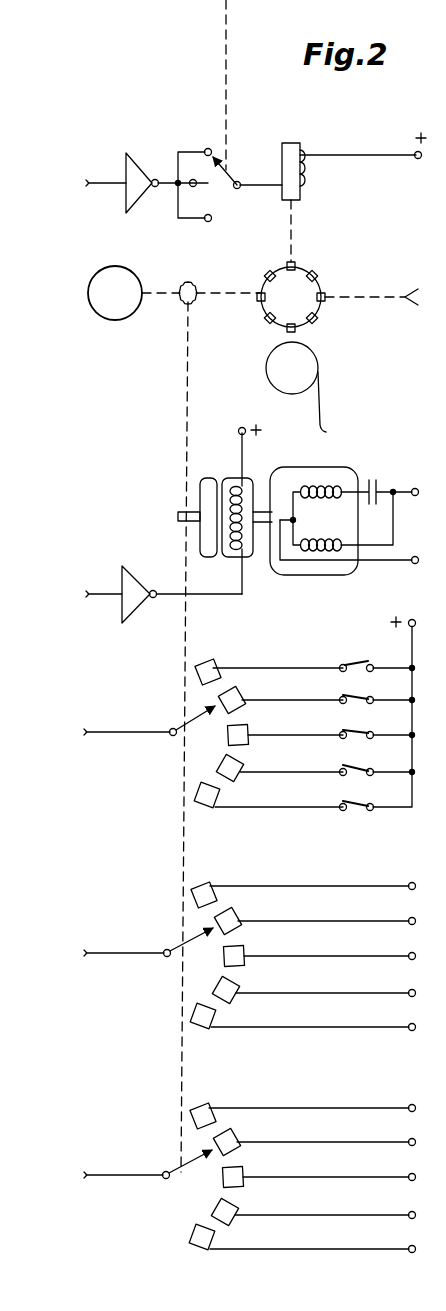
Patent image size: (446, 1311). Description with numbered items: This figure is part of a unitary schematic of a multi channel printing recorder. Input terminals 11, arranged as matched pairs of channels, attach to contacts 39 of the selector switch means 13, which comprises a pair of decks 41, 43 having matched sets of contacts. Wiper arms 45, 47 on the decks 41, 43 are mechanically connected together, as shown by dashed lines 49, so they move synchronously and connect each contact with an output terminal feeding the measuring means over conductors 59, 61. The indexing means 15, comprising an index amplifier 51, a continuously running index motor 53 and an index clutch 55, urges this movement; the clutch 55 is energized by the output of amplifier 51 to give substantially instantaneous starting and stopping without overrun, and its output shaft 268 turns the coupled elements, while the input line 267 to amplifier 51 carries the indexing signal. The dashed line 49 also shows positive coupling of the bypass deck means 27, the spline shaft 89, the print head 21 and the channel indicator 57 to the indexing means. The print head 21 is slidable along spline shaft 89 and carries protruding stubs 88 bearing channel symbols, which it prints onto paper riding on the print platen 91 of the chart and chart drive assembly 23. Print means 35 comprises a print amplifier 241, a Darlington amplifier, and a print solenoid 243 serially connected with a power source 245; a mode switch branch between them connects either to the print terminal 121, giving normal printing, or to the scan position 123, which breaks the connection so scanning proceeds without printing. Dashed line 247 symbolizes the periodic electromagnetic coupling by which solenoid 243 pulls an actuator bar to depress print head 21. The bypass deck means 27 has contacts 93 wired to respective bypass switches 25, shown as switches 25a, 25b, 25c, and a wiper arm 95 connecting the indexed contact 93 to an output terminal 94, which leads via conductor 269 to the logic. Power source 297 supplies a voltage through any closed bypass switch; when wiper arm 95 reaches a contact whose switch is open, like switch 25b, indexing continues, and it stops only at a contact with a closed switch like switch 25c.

The print means 35 is at (108, 78).
The print amplifier 241 is at (140, 162).
The print terminal 121 is at (205, 149).
The scan position 123 is at (189, 188).
The print solenoid 243 is at (290, 143).
The power source 245 is at (416, 150).
The dashed line 247 is at (294, 220).
The protruding stubs 88 is at (297, 266).
The print head 21 is at (311, 290).
The dashed lines 49 is at (162, 292).
The spline shaft 89 is at (194, 302).
The channel indicator 57 is at (118, 320).
The print platen 91 is at (274, 366).
The chart and chart drive assembly 23 is at (389, 359).
The indexing means 15 is at (135, 474).
The index clutch 55 is at (208, 478).
The index motor 53 is at (340, 467).
The output shaft 268 is at (178, 521).
The input line 267 is at (100, 593).
The index amplifier 51 is at (130, 615).
The power source 297 is at (412, 620).
The bypass deck means 27 is at (165, 702).
The conductor 269 is at (112, 733).
The output terminal 94 is at (170, 736).
The wiper arm 95 is at (200, 716).
The contacts 93 is at (204, 806).
The bypass switch means 25 is at (353, 812).
The switch 25a is at (359, 729).
The open bypass switch 25b is at (359, 766).
The closed bypass switch 25c is at (359, 801).
The selector switch means 13 is at (156, 1042).
The conductor 61 is at (121, 954).
The deck 43 is at (167, 948).
The wiper arm 47 is at (191, 942).
The input terminals 11 is at (370, 1040).
The deck 41 is at (160, 1190).
The conductor 59 is at (109, 1174).
The wiper arm 45 is at (186, 1166).
The contacts 39 is at (194, 1241).